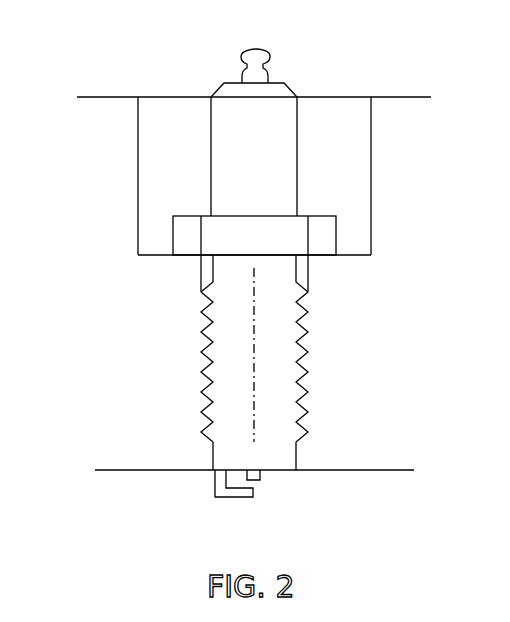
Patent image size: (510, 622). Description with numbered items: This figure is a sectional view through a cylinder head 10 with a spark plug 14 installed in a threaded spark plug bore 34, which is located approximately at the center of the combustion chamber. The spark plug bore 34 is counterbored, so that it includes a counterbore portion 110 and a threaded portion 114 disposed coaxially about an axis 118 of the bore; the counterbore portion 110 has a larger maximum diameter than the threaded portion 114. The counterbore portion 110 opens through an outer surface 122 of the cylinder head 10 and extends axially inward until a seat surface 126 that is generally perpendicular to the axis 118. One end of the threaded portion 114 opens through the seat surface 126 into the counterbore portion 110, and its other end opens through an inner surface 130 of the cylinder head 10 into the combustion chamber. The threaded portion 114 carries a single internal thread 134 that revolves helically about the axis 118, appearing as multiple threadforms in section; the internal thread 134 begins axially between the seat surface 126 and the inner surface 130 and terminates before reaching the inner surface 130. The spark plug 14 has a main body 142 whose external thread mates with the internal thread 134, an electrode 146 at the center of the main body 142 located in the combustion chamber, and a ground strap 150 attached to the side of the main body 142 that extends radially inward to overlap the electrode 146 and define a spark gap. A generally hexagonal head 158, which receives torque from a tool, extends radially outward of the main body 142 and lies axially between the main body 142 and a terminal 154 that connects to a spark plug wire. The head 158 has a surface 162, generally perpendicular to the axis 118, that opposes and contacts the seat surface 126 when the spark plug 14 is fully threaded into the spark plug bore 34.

The cylinder head 10 is at (145, 448).
The spark plug 14 is at (235, 157).
The spark plug bore 34 is at (200, 275).
The counterbore portion 110 is at (362, 163).
The threaded portion 114 is at (307, 275).
The axis 118 is at (254, 347).
The outer surface 122 is at (400, 97).
The seat surface 126 is at (360, 253).
The inner surface 130 is at (378, 470).
The internal thread 134 is at (300, 437).
The main body 142 is at (203, 385).
The electrode 146 is at (262, 478).
The ground strap 150 is at (242, 493).
The terminal 154 is at (245, 55).
The head 158 is at (187, 232).
The surface 162 is at (185, 257).